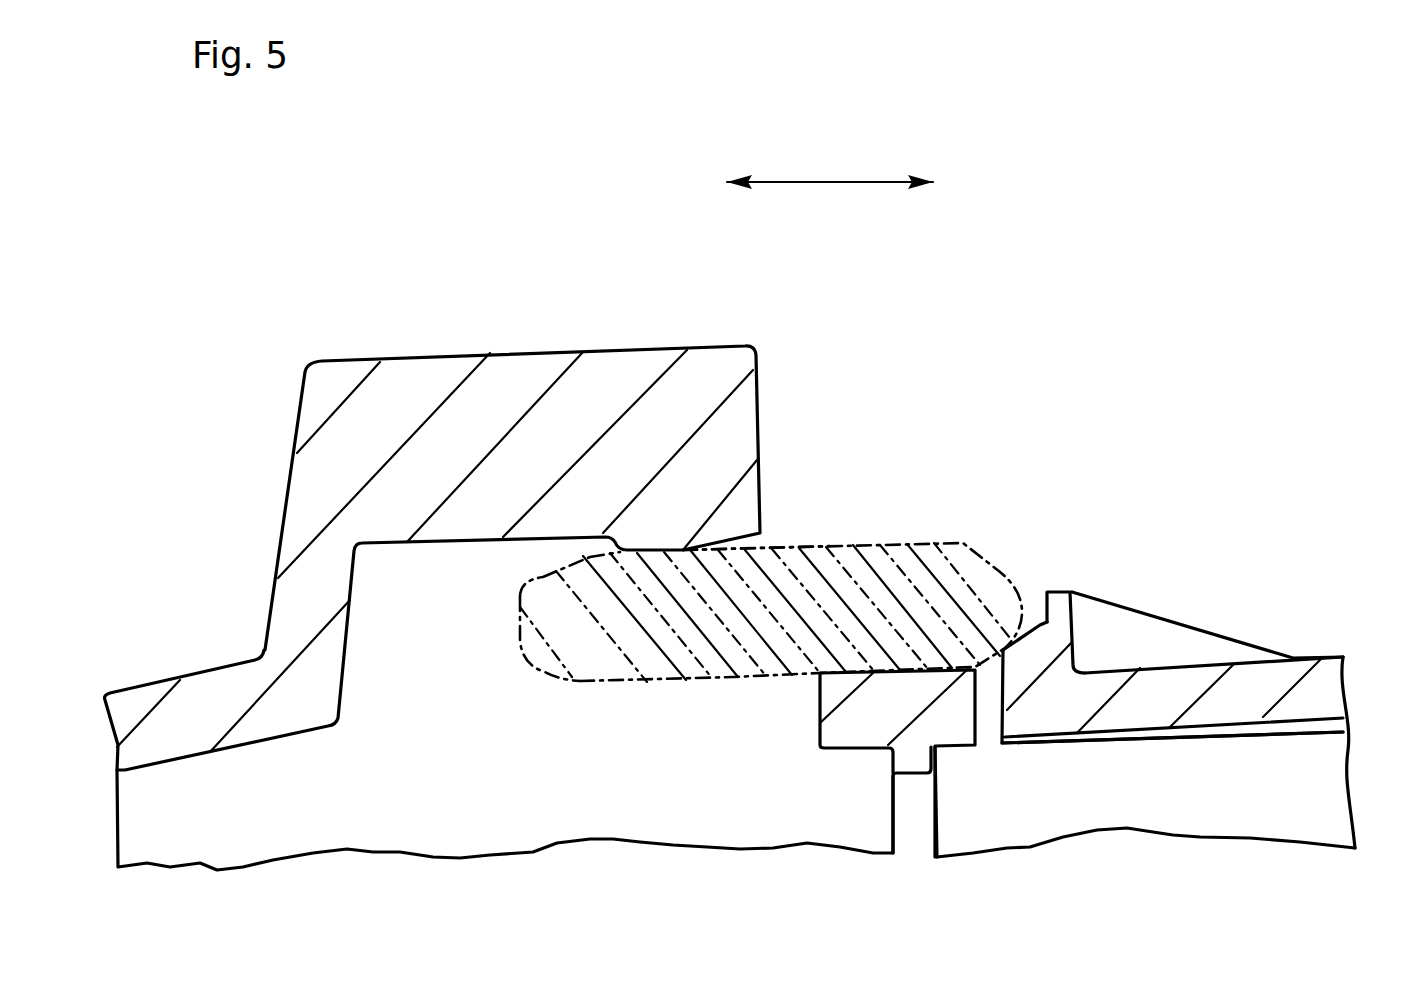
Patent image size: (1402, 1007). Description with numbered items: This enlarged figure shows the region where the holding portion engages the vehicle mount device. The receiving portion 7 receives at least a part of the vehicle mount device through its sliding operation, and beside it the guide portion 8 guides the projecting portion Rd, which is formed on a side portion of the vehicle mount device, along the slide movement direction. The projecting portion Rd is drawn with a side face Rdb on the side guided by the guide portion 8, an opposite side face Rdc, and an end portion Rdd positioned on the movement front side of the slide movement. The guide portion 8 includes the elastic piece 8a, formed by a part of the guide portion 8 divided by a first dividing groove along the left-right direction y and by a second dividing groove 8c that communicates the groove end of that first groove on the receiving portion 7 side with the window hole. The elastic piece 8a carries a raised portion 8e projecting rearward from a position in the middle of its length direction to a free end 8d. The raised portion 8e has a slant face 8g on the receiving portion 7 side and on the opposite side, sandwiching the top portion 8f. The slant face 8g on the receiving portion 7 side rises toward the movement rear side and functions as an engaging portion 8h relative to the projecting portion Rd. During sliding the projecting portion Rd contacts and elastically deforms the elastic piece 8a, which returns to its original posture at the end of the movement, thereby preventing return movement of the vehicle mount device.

The receiving portion 7 is at (396, 358).
The left-right direction y is at (828, 182).
The guide portion 8 is at (1101, 697).
The elastic piece 8a is at (1235, 638).
The second dividing groove 8c is at (983, 697).
The free end 8d is at (993, 742).
The raised portion 8e is at (1123, 640).
The top portion 8f is at (1060, 587).
The slant face 8g is at (1162, 617).
The engaging portion 8h is at (1003, 645).
The projecting portion Rd is at (718, 588).
The side face Rdb is at (675, 683).
The side face Rdc is at (800, 548).
The end portion Rdd is at (522, 643).